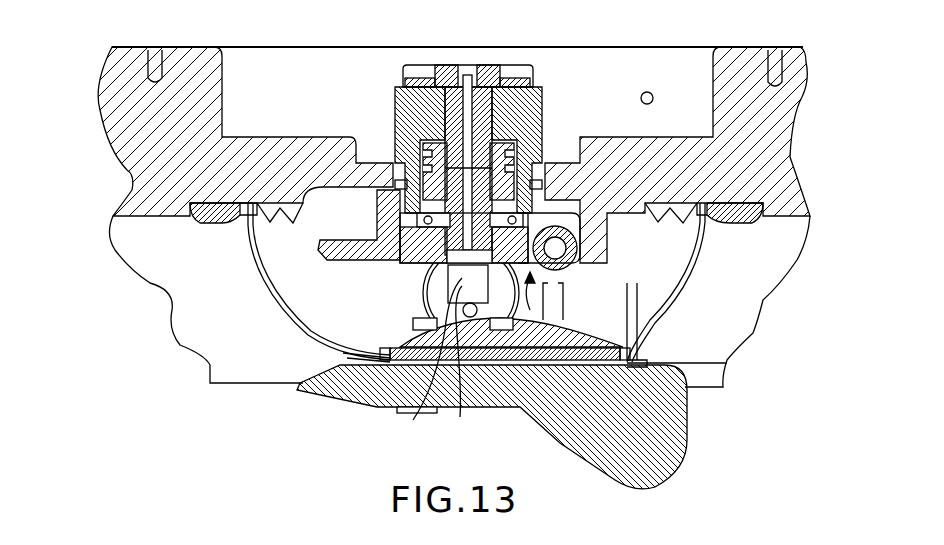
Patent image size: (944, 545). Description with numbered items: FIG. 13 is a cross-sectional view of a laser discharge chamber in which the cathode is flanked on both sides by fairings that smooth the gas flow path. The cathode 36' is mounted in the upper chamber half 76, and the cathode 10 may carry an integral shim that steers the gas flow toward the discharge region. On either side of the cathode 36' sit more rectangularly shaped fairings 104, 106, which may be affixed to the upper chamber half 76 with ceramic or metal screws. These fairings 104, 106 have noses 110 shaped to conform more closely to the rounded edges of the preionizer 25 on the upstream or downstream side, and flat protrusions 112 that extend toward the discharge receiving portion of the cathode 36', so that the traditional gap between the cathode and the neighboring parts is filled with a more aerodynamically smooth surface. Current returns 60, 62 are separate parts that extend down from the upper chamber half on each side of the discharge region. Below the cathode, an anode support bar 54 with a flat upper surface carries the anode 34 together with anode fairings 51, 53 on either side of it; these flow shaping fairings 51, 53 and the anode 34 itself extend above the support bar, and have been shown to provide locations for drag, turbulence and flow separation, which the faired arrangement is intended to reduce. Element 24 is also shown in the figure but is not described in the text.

The upper chamber half 76 is at (140, 189).
The cathode 36' is at (359, 225).
The rectangularly shaped fairing 104 is at (505, 225).
The preionizer 25 is at (554, 216).
The tube 24 is at (560, 302).
The anode fairing 51 is at (560, 343).
The current return 62 is at (677, 283).
The current return 60 is at (263, 278).
The anode fairing 53 is at (343, 353).
The cathode 10 is at (338, 248).
The nose 110 is at (462, 262).
The rectangularly shaped fairing 106 is at (432, 266).
The flat protrusion 112 is at (417, 361).
The anode 34 is at (461, 365).
The anode support bar 54 is at (677, 443).